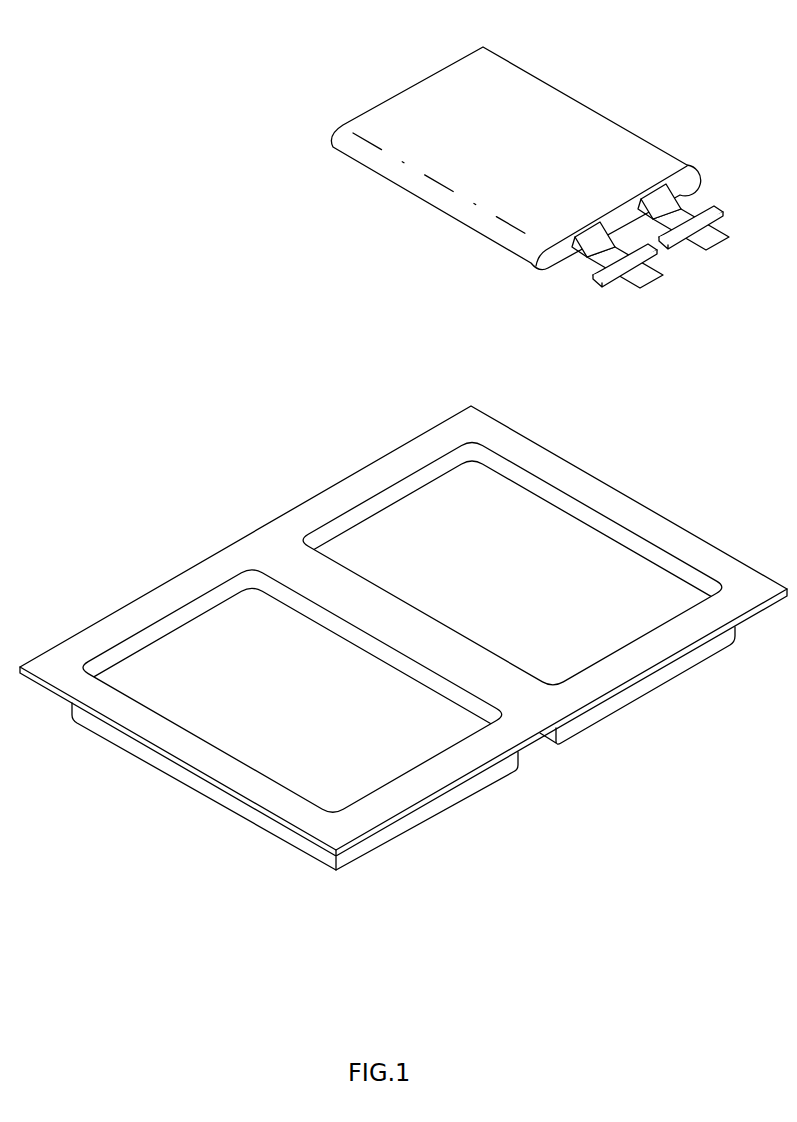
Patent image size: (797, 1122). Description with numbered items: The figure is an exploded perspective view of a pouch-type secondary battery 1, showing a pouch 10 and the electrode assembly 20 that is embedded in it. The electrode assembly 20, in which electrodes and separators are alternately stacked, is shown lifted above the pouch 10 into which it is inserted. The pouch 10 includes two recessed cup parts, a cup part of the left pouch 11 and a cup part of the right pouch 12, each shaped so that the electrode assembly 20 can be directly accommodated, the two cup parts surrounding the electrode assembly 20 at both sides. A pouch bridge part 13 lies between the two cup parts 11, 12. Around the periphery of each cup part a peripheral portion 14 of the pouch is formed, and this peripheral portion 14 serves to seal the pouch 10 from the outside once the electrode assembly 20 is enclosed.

The secondary battery 1 is at (190, 98).
The pouch 10 is at (403, 615).
The cup part of left pouch 11 is at (458, 797).
The cup part of right pouch 12 is at (687, 658).
The pouch bridge part 13 is at (397, 620).
The peripheral portion of pouch 14 is at (610, 675).
The electrode assembly 20 is at (600, 62).